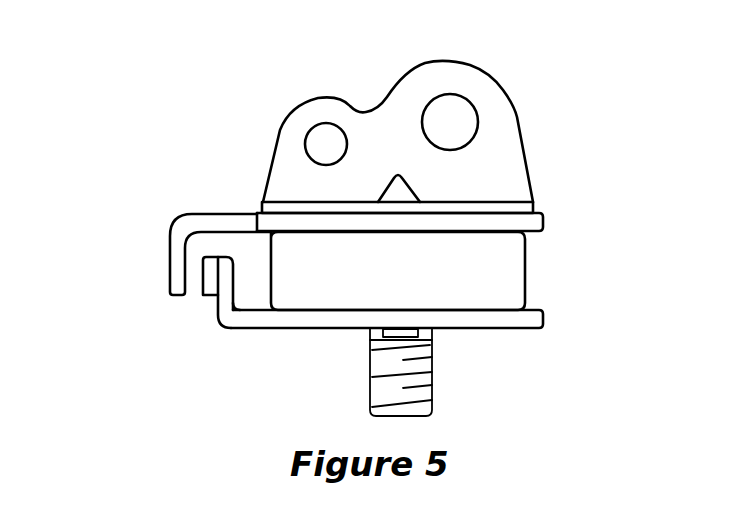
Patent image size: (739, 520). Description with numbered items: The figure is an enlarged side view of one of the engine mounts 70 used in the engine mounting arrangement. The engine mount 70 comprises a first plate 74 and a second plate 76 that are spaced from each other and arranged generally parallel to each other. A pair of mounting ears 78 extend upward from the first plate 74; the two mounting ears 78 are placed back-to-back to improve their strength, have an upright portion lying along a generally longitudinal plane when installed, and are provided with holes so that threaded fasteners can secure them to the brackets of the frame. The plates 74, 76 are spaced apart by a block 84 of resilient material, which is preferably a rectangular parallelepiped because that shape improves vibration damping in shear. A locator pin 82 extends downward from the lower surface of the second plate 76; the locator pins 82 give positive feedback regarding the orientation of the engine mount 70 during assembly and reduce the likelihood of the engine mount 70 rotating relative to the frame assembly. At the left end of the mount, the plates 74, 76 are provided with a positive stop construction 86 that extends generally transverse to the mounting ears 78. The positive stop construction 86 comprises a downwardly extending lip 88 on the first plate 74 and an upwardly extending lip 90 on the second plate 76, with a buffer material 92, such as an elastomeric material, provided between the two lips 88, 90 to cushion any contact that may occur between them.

The engine mount 70 is at (327, 223).
The first plate 74 is at (374, 191).
The second plate 76 is at (387, 347).
The mounting ears 78 is at (398, 117).
The locator pins 82 is at (366, 372).
The block of resilient material 84 is at (444, 271).
The positive stop construction 86 is at (137, 317).
The downwardly extending lip 88 is at (179, 251).
The upwardly extending lip 90 is at (221, 317).
The buffer material 92 is at (165, 307).